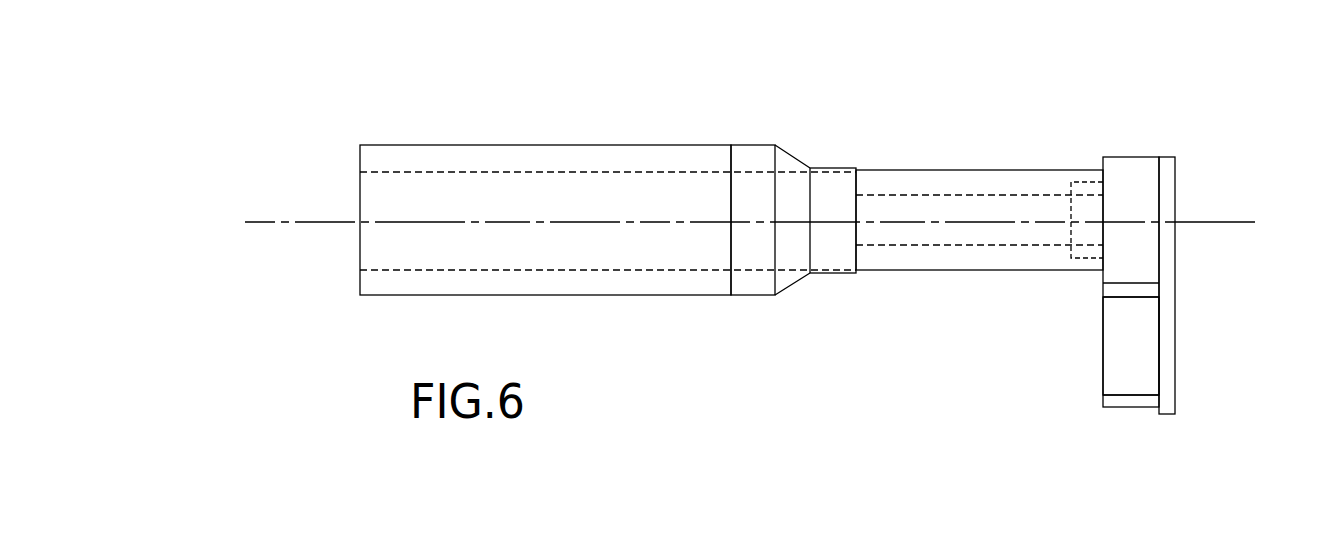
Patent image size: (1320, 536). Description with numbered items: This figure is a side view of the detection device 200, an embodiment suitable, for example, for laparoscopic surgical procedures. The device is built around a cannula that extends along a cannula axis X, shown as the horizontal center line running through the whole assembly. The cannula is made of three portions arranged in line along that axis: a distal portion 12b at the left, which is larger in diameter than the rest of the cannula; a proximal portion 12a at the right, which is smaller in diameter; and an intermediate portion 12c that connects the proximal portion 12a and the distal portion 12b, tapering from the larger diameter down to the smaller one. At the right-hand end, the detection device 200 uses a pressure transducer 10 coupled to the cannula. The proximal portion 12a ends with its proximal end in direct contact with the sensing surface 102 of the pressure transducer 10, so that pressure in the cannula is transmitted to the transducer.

The detection device 200 is at (240, 108).
The cannula axis X is at (245, 222).
The distal portion 12b is at (503, 145).
The intermediate portion 12c is at (790, 290).
The proximal portion 12a is at (961, 170).
The pressure transducer 10 is at (1180, 187).
The sensing surface 102 is at (1103, 353).